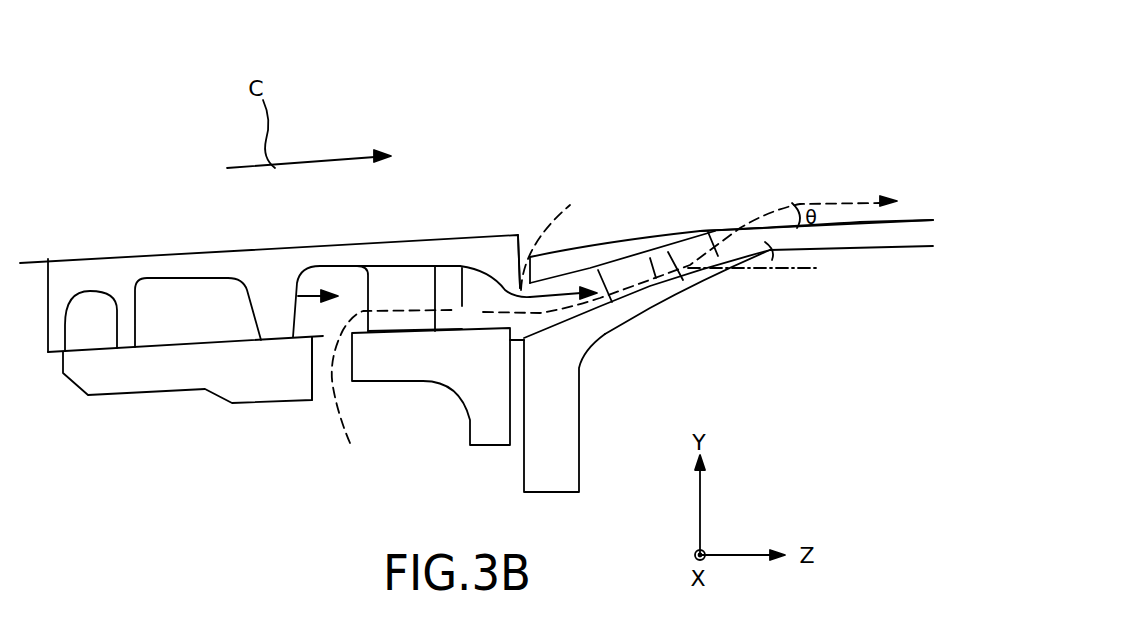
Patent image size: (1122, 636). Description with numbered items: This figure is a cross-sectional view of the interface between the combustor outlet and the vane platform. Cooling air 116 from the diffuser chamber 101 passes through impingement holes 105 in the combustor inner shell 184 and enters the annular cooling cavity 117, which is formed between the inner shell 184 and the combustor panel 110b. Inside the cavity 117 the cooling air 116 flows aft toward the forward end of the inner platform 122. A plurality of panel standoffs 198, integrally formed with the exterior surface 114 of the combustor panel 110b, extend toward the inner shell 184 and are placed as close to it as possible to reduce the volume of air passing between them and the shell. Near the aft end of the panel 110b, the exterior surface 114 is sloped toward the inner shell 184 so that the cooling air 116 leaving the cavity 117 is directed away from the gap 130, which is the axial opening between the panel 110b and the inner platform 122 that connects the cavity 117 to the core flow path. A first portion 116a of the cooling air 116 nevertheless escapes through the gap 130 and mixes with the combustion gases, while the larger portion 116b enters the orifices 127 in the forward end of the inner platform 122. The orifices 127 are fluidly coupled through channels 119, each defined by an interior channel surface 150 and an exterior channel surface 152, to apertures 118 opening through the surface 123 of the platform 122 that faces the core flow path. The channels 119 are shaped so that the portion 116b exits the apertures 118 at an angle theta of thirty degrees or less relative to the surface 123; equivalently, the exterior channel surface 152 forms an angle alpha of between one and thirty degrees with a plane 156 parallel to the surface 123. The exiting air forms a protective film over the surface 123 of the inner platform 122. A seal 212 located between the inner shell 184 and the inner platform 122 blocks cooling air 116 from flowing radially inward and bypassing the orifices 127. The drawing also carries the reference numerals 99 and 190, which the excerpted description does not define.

The gas turbine engine system 99 is at (170, 141).
The combustor panel 110b is at (152, 262).
The diffuser chamber 101 is at (215, 523).
The annular cooling cavity 117 is at (298, 296).
The combustor inner shell 184 is at (217, 370).
The impingement holes 105 is at (315, 414).
The panel standoffs 198 is at (412, 288).
The channels 119 is at (520, 290).
The gap 130 is at (532, 216).
The exterior surface 114 is at (462, 306).
The seal 212 is at (517, 425).
The orifices 127 is at (562, 338).
The interior channel surface 150 is at (690, 268).
The plane 156 is at (778, 268).
The vane channel 190 is at (627, 275).
The exterior channel surface 152 is at (707, 230).
The inner platform 122 is at (896, 232).
The apertures 118 is at (748, 209).
The surface 123 is at (907, 225).
The cooling air 116 is at (350, 443).
The portion of cooling air 116b is at (525, 315).
The portion of cooling air 116a is at (582, 199).